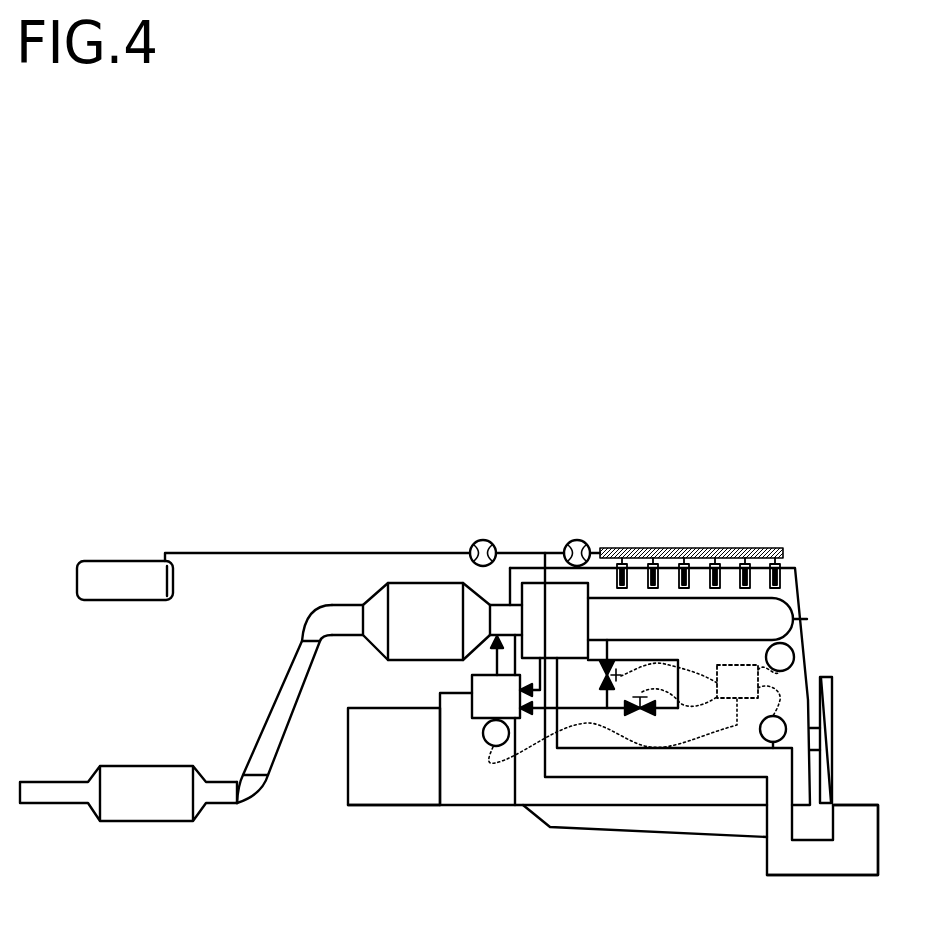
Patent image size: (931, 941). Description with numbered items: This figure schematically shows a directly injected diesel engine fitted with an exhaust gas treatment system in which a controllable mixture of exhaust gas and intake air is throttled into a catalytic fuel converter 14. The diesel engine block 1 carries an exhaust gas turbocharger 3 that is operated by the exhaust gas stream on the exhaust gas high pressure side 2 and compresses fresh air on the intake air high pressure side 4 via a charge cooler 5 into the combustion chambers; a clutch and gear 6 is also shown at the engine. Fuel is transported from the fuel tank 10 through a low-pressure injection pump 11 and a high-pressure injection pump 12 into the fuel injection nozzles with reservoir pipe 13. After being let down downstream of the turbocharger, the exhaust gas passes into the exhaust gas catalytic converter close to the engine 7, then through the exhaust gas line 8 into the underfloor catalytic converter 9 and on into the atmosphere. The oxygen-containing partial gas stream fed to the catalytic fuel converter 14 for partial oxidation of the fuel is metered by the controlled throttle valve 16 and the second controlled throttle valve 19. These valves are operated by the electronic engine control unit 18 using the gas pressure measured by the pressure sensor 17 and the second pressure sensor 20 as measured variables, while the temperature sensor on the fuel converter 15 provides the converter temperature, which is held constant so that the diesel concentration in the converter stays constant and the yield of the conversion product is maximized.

The diesel engine block 1 is at (590, 702).
The exhaust gas high pressure side (exhaust manifold) 2 is at (690, 619).
The exhaust gas turbocharger 3 is at (584, 645).
The intake air high pressure side (intake manifold) 4 is at (699, 714).
The charge cooler 5 is at (822, 840).
The clutch and gear 6 is at (431, 749).
The exhaust gas catalytic converter close to engine (end wall) 7 is at (411, 621).
The exhaust gas line 8 is at (284, 704).
The underfloor catalytic converter 9 is at (128, 793).
The fuel tank 10 is at (273, 576).
The low-pressure injection pump 11 is at (515, 536).
The high-pressure injection pump 12 is at (579, 536).
The fuel injection nozzles with reservoir pipe 13 is at (691, 552).
The catalytic fuel converter 14 is at (496, 677).
The temperature sensor on the fuel converter 15 is at (593, 730).
The controlled throttle valve 16 is at (637, 717).
The pressure sensor on the high-pressure side 17 is at (757, 718).
The electronic engine control unit 18 is at (737, 681).
The second controlled throttle valve 19 is at (640, 674).
The second pressure sensor on the high-pressure side 20 is at (786, 669).